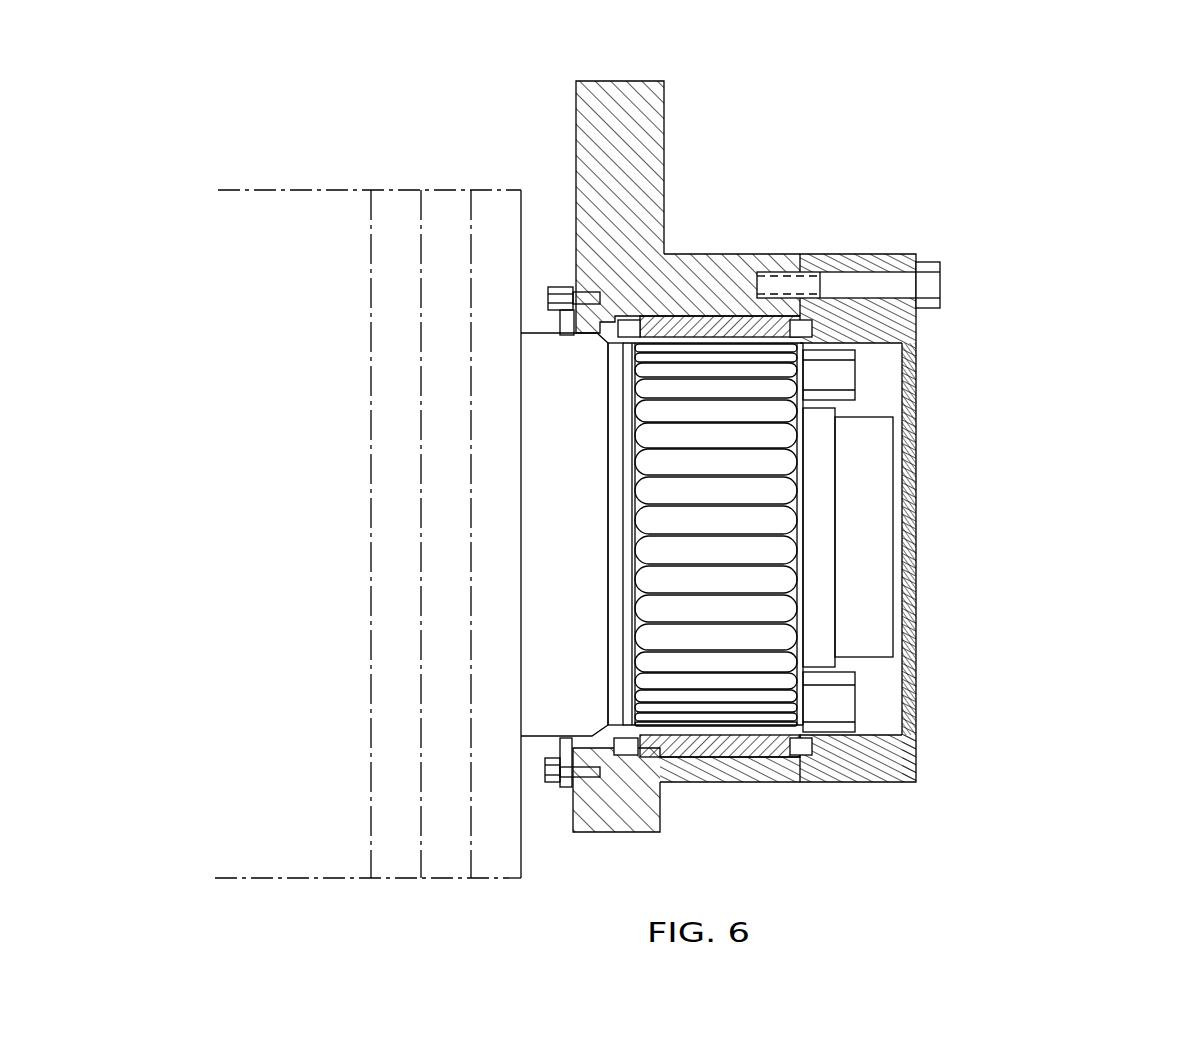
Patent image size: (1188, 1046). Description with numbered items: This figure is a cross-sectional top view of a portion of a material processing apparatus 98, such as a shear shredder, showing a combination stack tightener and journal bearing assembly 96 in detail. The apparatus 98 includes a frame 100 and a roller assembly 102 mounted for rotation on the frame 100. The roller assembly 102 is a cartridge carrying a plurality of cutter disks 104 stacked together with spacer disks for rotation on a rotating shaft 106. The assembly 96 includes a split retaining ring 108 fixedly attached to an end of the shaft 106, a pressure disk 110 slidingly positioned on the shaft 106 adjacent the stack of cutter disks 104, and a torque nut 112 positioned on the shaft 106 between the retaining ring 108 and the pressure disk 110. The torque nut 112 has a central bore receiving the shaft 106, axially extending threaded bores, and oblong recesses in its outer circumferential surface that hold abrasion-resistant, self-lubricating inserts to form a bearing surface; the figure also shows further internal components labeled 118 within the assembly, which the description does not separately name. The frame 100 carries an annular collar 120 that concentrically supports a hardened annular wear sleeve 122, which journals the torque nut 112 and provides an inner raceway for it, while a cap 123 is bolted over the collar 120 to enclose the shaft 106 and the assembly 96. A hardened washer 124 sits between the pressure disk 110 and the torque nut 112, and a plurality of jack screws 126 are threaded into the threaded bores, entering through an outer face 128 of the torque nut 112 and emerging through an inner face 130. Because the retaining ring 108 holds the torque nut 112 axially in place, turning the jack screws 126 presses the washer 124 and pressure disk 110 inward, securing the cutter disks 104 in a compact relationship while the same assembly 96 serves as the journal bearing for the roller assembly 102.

The combination stack tightener and journal bearing assembly 96 is at (952, 518).
The material processing apparatus 98 is at (967, 197).
The frame 100 is at (697, 456).
The roller assembly 102 is at (368, 457).
The cutter disks 104 is at (423, 454).
The rotating shaft 106 is at (961, 537).
The split retaining ring 108 is at (945, 537).
The pressure disk 110 is at (422, 537).
The torque nut 112 is at (944, 534).
The spring 118 is at (630, 593).
The annular collar 120 is at (730, 478).
The annular wear sleeve 122 is at (724, 482).
The cap 123 is at (994, 539).
The hardened washer 124 is at (535, 560).
The jack screws 126 is at (968, 541).
The outer face 128 is at (942, 534).
The inner face 130 is at (448, 534).